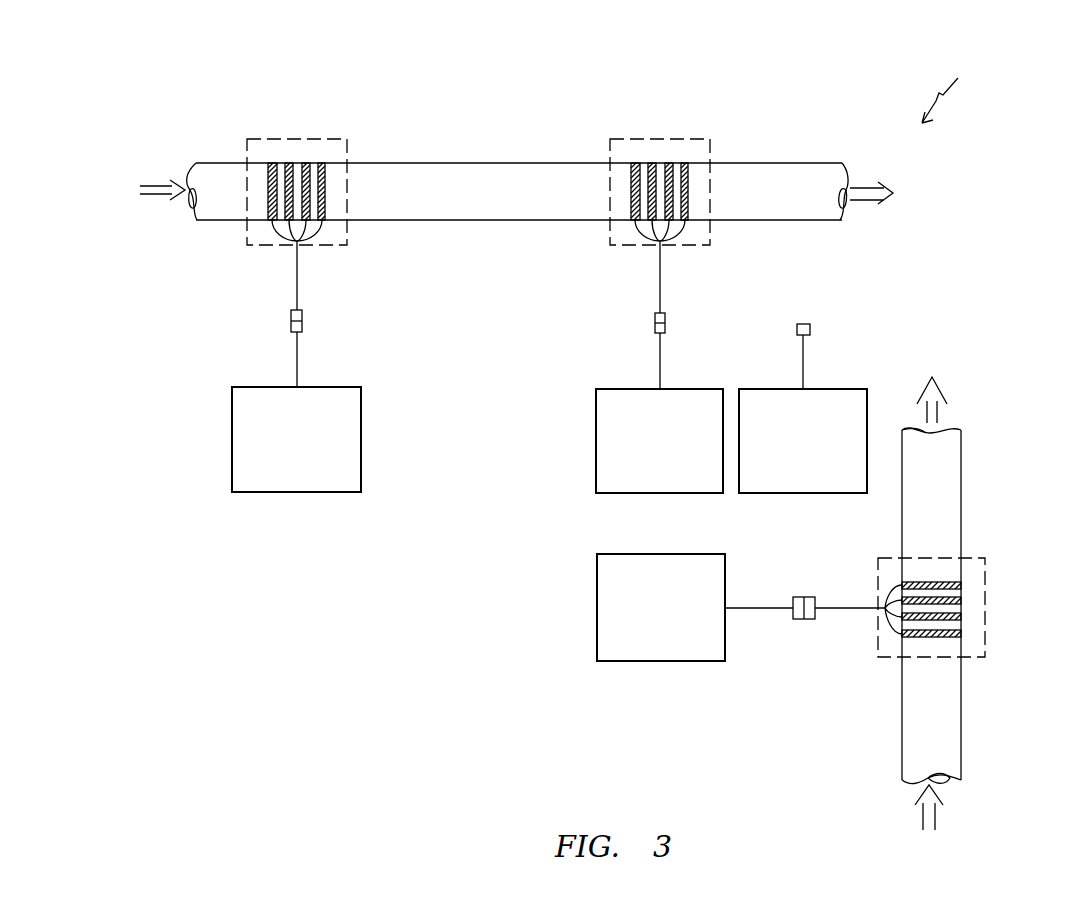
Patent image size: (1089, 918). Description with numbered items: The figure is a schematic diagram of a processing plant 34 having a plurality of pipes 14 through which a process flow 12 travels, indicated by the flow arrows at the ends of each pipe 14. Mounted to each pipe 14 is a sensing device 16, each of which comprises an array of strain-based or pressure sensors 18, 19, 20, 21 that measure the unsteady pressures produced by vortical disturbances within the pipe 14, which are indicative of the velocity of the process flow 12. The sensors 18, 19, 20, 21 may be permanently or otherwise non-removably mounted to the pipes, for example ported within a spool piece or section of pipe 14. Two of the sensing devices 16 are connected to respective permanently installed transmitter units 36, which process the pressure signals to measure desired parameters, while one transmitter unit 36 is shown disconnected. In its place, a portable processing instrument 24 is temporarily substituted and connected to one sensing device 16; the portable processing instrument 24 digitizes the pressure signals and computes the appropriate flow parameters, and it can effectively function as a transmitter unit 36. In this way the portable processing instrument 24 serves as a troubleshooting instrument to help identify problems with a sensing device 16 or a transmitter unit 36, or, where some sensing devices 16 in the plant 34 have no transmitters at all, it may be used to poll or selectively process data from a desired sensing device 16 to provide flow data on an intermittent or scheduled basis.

The process flow 12 is at (150, 198).
The pipe 14 is at (473, 163).
The sensing device 16 is at (303, 139).
The pressure sensor 18 is at (272, 163).
The pressure sensor 19 is at (288, 163).
The pressure sensor 20 is at (303, 163).
The pressure sensor 21 is at (325, 188).
The portable processing instrument 24 is at (596, 457).
The processing plant 34 is at (952, 90).
The transmitter unit 36 is at (361, 447).